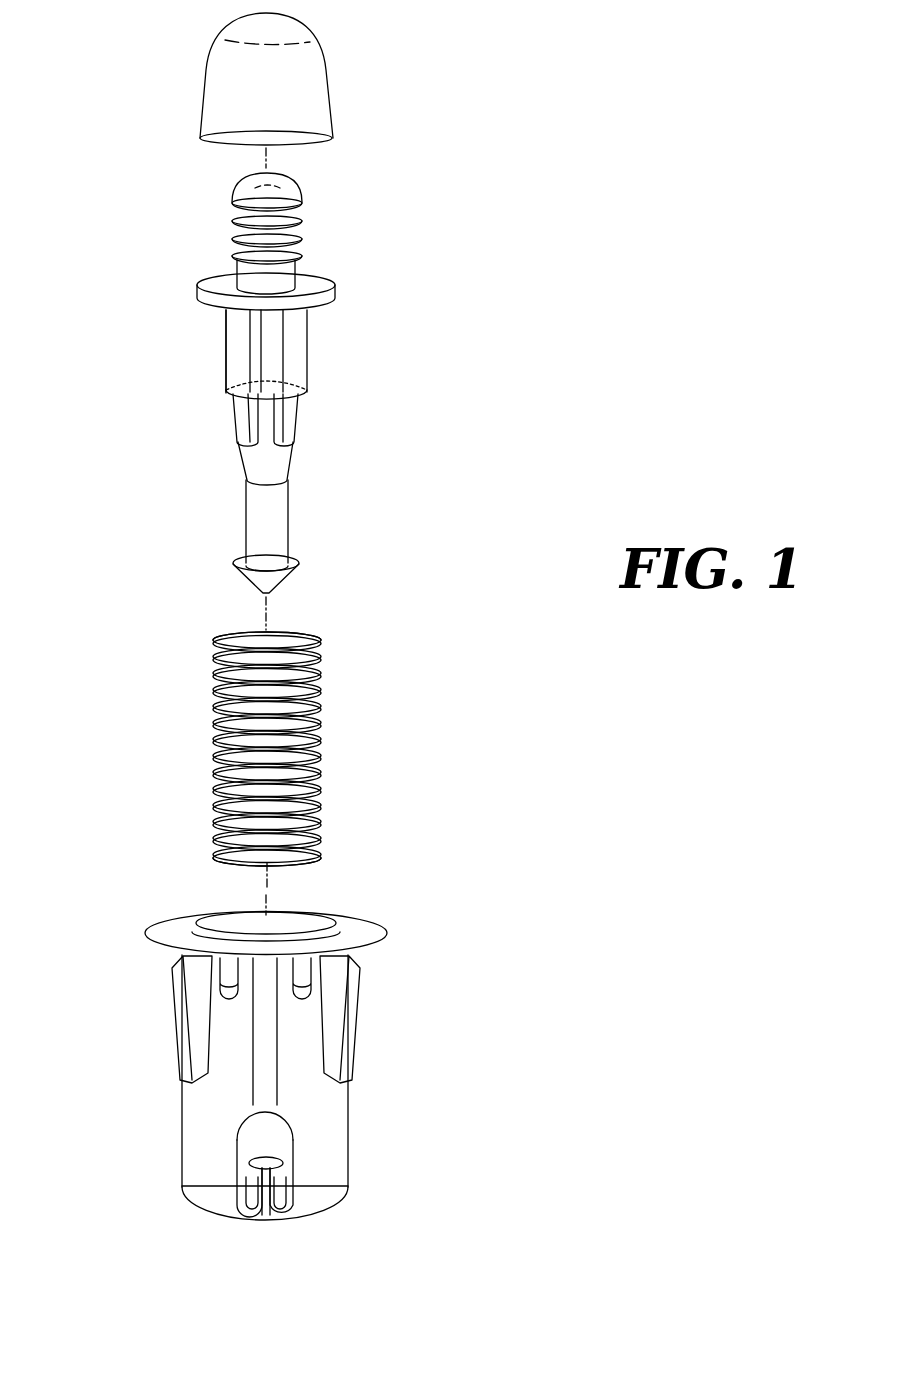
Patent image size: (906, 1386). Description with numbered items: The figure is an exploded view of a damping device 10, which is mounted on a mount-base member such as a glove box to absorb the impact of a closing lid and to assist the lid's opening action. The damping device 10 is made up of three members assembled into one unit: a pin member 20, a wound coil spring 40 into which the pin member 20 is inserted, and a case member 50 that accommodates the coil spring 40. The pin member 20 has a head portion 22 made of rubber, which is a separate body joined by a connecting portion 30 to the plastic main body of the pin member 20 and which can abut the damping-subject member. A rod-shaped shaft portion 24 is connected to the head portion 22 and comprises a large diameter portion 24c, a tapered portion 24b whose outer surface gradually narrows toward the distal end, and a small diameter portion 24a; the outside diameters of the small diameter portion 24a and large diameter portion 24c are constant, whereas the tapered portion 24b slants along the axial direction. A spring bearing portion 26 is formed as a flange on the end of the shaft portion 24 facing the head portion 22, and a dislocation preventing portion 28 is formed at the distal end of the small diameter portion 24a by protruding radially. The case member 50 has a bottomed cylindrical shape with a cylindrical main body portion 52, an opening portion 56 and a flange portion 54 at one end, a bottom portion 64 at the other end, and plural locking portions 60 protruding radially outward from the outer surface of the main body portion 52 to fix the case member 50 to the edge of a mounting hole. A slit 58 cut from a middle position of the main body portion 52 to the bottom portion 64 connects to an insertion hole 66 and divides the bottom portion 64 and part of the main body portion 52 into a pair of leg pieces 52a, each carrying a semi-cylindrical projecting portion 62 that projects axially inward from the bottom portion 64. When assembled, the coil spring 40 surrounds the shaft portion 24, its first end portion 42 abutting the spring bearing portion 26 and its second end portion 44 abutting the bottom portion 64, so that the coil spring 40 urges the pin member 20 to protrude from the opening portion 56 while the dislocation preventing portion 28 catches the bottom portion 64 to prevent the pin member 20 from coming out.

The damping device 10 is at (348, 1245).
The pin member 20 is at (218, 351).
The head portion 22 is at (325, 78).
The shaft portion 24 is at (339, 436).
The small diameter portion 24a is at (288, 518).
The tapered portion 24b is at (297, 445).
The large diameter portion 24c is at (300, 345).
The spring bearing portion 26 is at (338, 294).
The dislocation preventing portion 28 is at (296, 566).
The connecting portion 30 is at (303, 216).
The coil spring 40 is at (238, 744).
The first end portion 42 is at (297, 634).
The second end portion 44 is at (287, 862).
The case member 50 is at (276, 1070).
The main body portion 52 is at (305, 1028).
The leg pieces 52a is at (193, 1160).
The flange portion 54 is at (387, 938).
The opening portion 56 is at (323, 913).
The slit 58 is at (278, 1183).
The locking portions 60 is at (176, 981).
The projecting portions 62 is at (250, 1182).
The bottom portion 64 is at (322, 1215).
The insertion hole 66 is at (258, 1226).